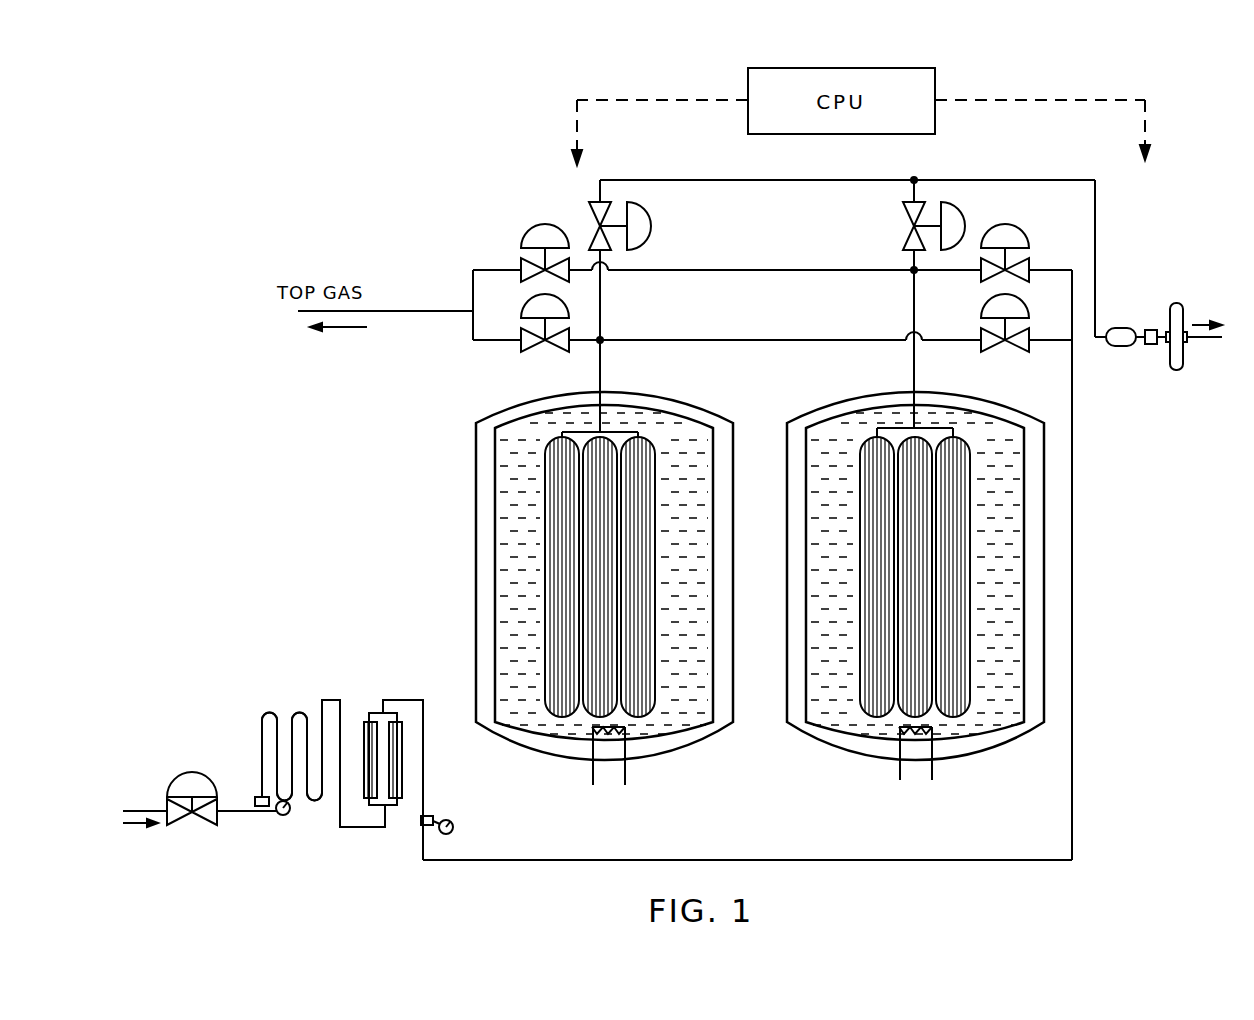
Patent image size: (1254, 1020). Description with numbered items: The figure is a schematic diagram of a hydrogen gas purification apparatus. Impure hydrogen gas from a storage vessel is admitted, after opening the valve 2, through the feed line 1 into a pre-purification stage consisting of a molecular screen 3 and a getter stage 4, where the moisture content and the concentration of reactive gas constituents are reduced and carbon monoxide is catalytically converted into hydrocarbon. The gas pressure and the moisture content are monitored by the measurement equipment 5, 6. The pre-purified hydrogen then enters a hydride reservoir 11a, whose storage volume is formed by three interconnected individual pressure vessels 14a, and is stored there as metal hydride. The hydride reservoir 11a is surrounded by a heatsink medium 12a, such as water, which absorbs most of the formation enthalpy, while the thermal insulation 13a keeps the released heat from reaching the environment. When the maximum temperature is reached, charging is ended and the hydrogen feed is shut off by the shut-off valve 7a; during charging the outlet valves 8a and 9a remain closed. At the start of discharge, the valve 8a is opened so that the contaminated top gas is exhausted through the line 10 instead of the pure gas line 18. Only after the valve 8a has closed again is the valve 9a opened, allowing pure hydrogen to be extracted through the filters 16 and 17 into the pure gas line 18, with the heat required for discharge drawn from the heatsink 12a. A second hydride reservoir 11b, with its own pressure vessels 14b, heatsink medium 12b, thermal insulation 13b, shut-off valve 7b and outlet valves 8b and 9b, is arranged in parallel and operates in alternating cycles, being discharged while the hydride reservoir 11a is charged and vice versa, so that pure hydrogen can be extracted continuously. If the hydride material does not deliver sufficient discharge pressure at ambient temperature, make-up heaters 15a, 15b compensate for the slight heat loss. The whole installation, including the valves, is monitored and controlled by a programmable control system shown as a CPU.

The feed line 1 is at (153, 809).
The valve 2 is at (205, 821).
The molecular screen 3 is at (283, 712).
The getter stage 4 is at (370, 806).
The measurement equipment 5 is at (257, 797).
The measurement equipment 6 is at (288, 814).
The shut-off valve 7a is at (1027, 331).
The shut-off valve 7b is at (1028, 262).
The outlet valve 8a is at (526, 337).
The outlet valve 8b is at (536, 226).
The outlet valve 9a is at (589, 206).
The outlet valve 9b is at (918, 203).
The line 10 is at (425, 310).
The hydride reservoir 11a is at (450, 483).
The second hydride reservoir 11b is at (1098, 503).
The heatsink medium 12a is at (530, 446).
The heatsink medium 12b is at (1000, 570).
The thermal insulation 13a is at (477, 668).
The thermal insulation 13b is at (1041, 550).
The individual pressure vessels 14a is at (570, 718).
The individual pressure vessels 14b is at (973, 620).
The make-up heater 15a is at (626, 775).
The make-up heater 15b is at (933, 773).
The filter 16 is at (1121, 330).
The filter 17 is at (1175, 366).
The pure gas line 18 is at (1197, 340).